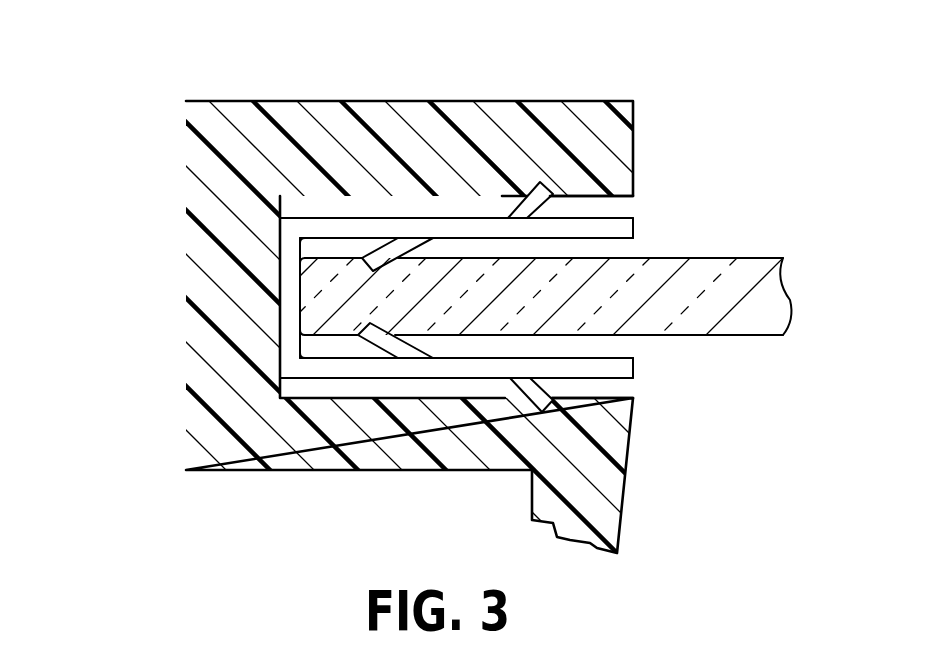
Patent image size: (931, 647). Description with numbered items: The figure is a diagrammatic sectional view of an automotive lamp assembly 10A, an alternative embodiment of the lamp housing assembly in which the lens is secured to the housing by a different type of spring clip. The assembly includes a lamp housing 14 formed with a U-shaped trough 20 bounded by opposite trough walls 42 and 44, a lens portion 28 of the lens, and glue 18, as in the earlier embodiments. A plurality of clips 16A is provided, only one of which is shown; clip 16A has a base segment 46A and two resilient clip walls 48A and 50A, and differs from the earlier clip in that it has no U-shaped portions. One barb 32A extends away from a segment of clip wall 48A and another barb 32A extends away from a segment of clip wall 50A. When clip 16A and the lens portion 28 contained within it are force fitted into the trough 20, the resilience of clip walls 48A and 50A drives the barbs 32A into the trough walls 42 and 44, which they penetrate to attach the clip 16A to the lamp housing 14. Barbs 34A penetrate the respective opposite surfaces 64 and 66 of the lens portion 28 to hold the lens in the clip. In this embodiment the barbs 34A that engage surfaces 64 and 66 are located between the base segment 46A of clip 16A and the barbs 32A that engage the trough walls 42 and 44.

The automotive lamp assembly 10A is at (140, 141).
The lamp housing 14 is at (352, 48).
The clip 16A is at (680, 212).
The glue 18 is at (597, 243).
The U-shaped trough 20 is at (444, 299).
The lens portion 28 is at (546, 296).
The barb 32A is at (508, 218).
The barb 34A is at (370, 257).
The trough wall 42 is at (597, 200).
The trough wall 44 is at (623, 378).
The base segment 46A is at (300, 290).
The clip wall 48A is at (451, 238).
The clip wall 50A is at (452, 350).
The surface 64 is at (757, 258).
The surface 66 is at (758, 335).